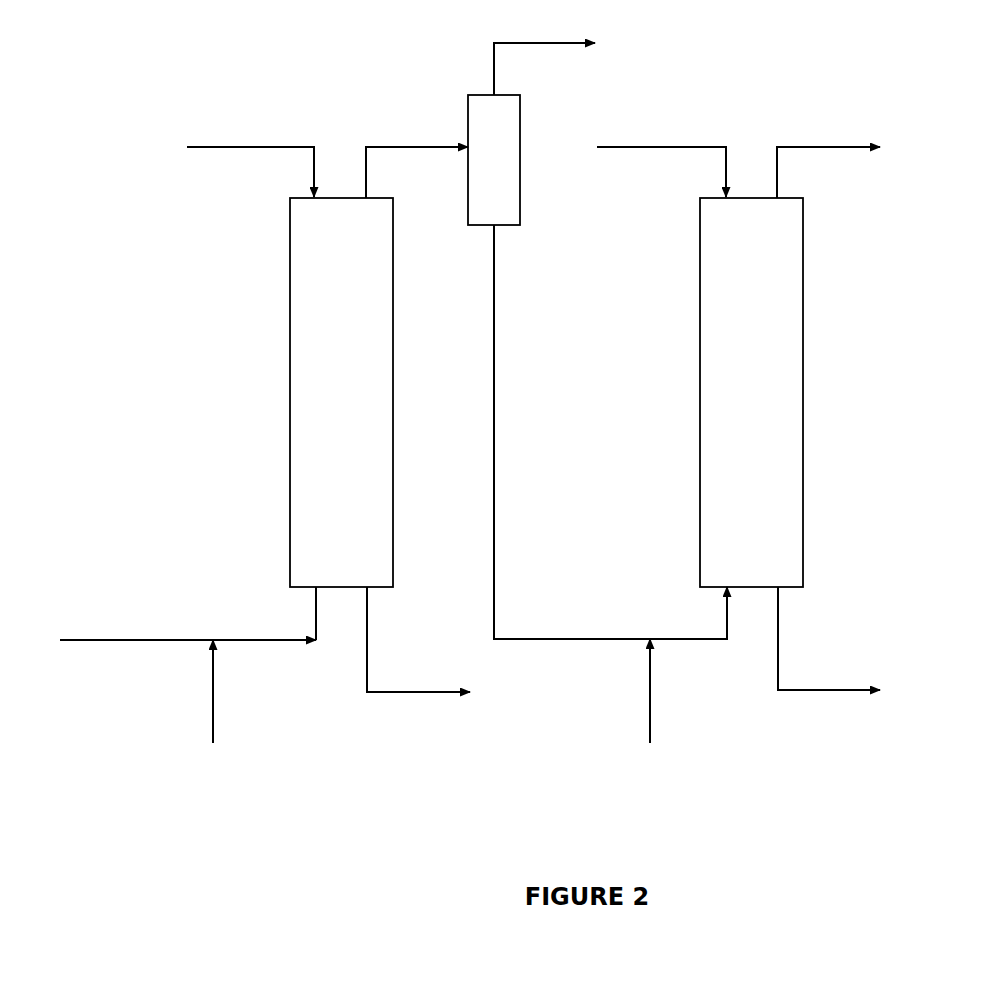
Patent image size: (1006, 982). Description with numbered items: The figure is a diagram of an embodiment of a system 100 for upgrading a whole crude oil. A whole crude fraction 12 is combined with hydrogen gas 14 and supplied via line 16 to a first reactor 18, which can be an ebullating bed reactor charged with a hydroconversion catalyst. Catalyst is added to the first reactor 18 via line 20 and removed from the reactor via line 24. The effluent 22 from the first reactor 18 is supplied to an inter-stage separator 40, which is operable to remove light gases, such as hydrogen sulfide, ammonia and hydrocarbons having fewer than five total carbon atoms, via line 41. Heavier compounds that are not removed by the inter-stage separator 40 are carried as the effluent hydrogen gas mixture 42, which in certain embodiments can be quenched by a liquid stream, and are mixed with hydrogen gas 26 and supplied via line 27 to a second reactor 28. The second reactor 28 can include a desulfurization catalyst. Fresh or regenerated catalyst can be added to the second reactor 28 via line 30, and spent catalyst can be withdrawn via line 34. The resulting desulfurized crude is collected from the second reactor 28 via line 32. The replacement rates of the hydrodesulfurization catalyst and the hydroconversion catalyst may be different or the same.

The process system 100 is at (992, 185).
The whole crude fraction 12 is at (162, 640).
The hydrogen gas 14 is at (213, 666).
The line 16 is at (264, 640).
The first reactor 18 is at (290, 330).
The line 20 is at (265, 147).
The effluent 22 is at (443, 147).
The line 24 is at (393, 692).
The hydrogen gas 26 is at (648, 666).
The line 27 is at (688, 639).
The second reactor 28 is at (803, 328).
The line 30 is at (674, 147).
The line 32 is at (854, 147).
The line 34 is at (803, 690).
The inter-stage separator 40 is at (482, 95).
The line 41 is at (558, 43).
The effluent hydrogen gas mixture 42 is at (495, 407).